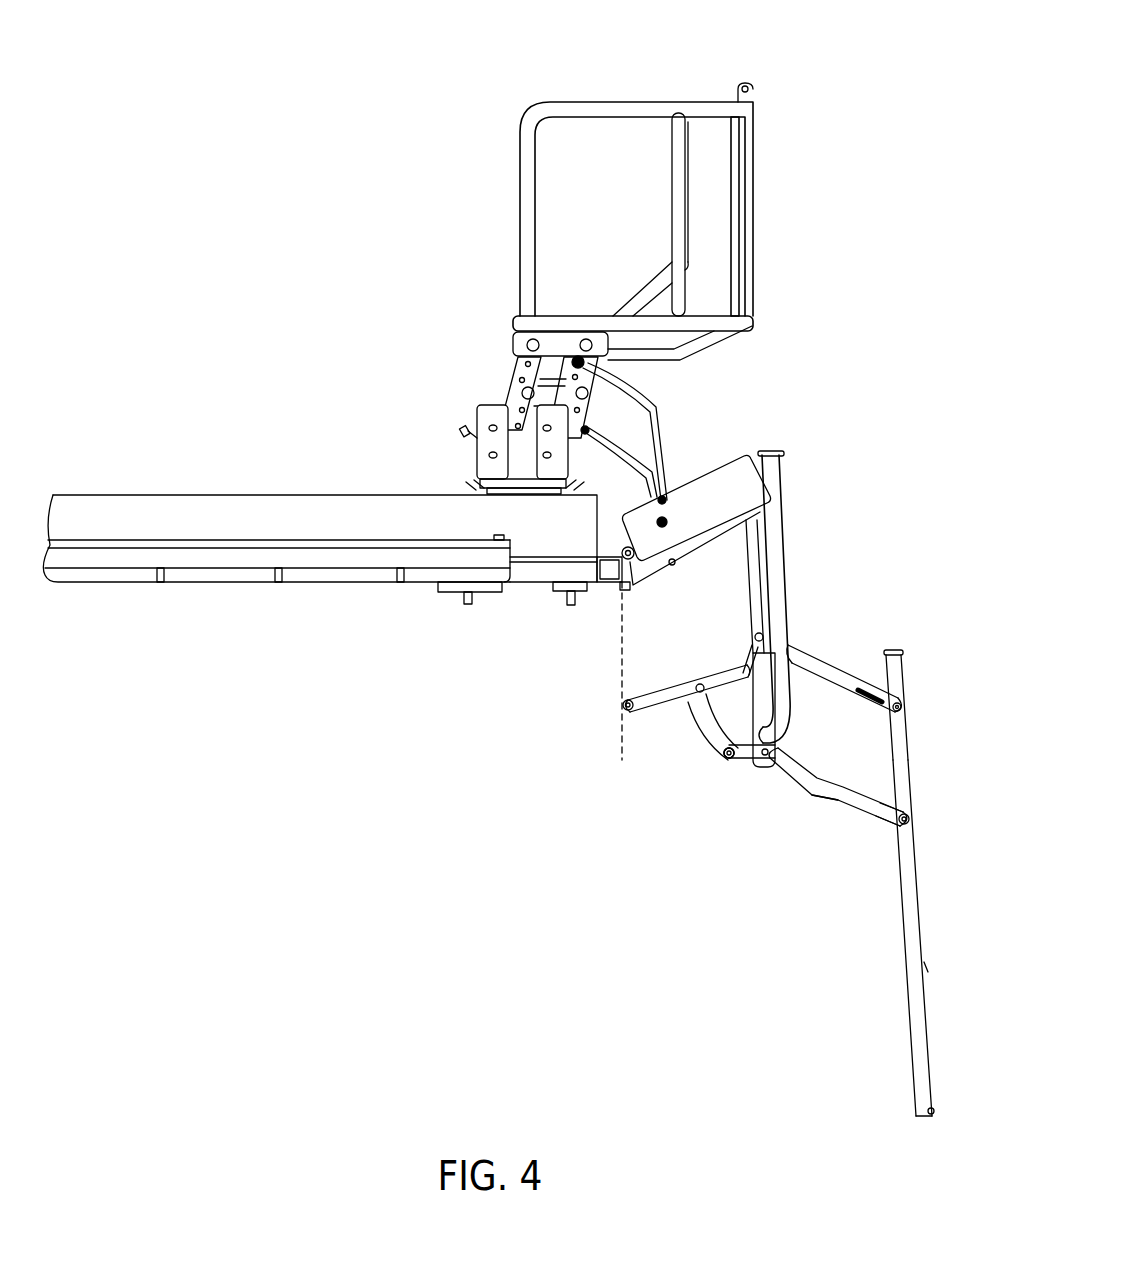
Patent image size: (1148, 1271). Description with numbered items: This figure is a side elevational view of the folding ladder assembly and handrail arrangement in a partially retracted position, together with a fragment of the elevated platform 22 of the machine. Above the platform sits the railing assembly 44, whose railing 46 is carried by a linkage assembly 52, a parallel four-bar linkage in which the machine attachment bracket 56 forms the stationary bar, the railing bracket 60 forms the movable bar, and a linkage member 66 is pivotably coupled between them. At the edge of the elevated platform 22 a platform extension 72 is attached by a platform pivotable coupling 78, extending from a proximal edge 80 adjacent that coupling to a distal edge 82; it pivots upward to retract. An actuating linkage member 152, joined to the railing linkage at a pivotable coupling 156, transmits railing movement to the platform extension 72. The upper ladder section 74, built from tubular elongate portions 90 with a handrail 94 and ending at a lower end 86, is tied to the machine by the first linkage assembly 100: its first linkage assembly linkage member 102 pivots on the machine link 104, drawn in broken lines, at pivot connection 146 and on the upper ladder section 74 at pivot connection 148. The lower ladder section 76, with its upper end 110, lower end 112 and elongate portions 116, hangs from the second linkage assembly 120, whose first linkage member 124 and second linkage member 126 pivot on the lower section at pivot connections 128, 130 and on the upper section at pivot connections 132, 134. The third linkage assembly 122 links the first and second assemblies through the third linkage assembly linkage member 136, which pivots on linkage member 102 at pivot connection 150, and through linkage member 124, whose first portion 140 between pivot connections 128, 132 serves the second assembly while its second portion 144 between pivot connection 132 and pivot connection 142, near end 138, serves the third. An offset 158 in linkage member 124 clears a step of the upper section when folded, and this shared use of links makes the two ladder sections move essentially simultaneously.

The elevated platform 22 is at (518, 565).
The railing assembly 44 is at (680, 200).
The railing 46 is at (572, 103).
The linkage assembly 52 is at (506, 416).
The machine attachment bracket 56 is at (485, 443).
The railing bracket 60 is at (556, 331).
The linkage member 66 is at (514, 366).
The platform extension 72 is at (710, 510).
The upper ladder section 74 is at (752, 543).
The lower ladder section 76 is at (891, 884).
The platform pivotable coupling 78 is at (626, 546).
The proximal edge 80 is at (620, 584).
The distal edge 82 is at (775, 609).
The lower end 86 is at (864, 801).
The elongate portion 90 is at (752, 585).
The handrail 94 is at (782, 527).
The first linkage assembly 100 is at (638, 679).
The first linkage assembly linkage member 102 is at (650, 692).
The machine link 104 is at (620, 648).
The upper end 110 is at (896, 650).
The lower end 112 is at (924, 1118).
The elongate portion 116 is at (915, 1042).
The second linkage assembly 120 is at (873, 650).
The third linkage assembly 122 is at (688, 794).
The second linkage assembly first linkage member 124 is at (880, 826).
The second linkage assembly second linkage member 126 is at (830, 688).
The pivot connection 128 is at (910, 820).
The pivot connection 130 is at (904, 705).
The pivot connection 132 is at (738, 762).
The pivot connection 134 is at (764, 636).
The third linkage assembly linkage member 136 is at (713, 753).
The end 138 is at (727, 762).
The first portion 140 is at (833, 778).
The pivot connection 142 is at (730, 748).
The second portion 144 is at (721, 782).
The pivot connection 146 is at (624, 708).
The pivot connection 148 is at (698, 712).
The pivot connection 150 is at (703, 684).
The actuating linkage member 152 is at (660, 402).
The pivotable coupling 156 is at (583, 355).
The offset 158 is at (845, 802).